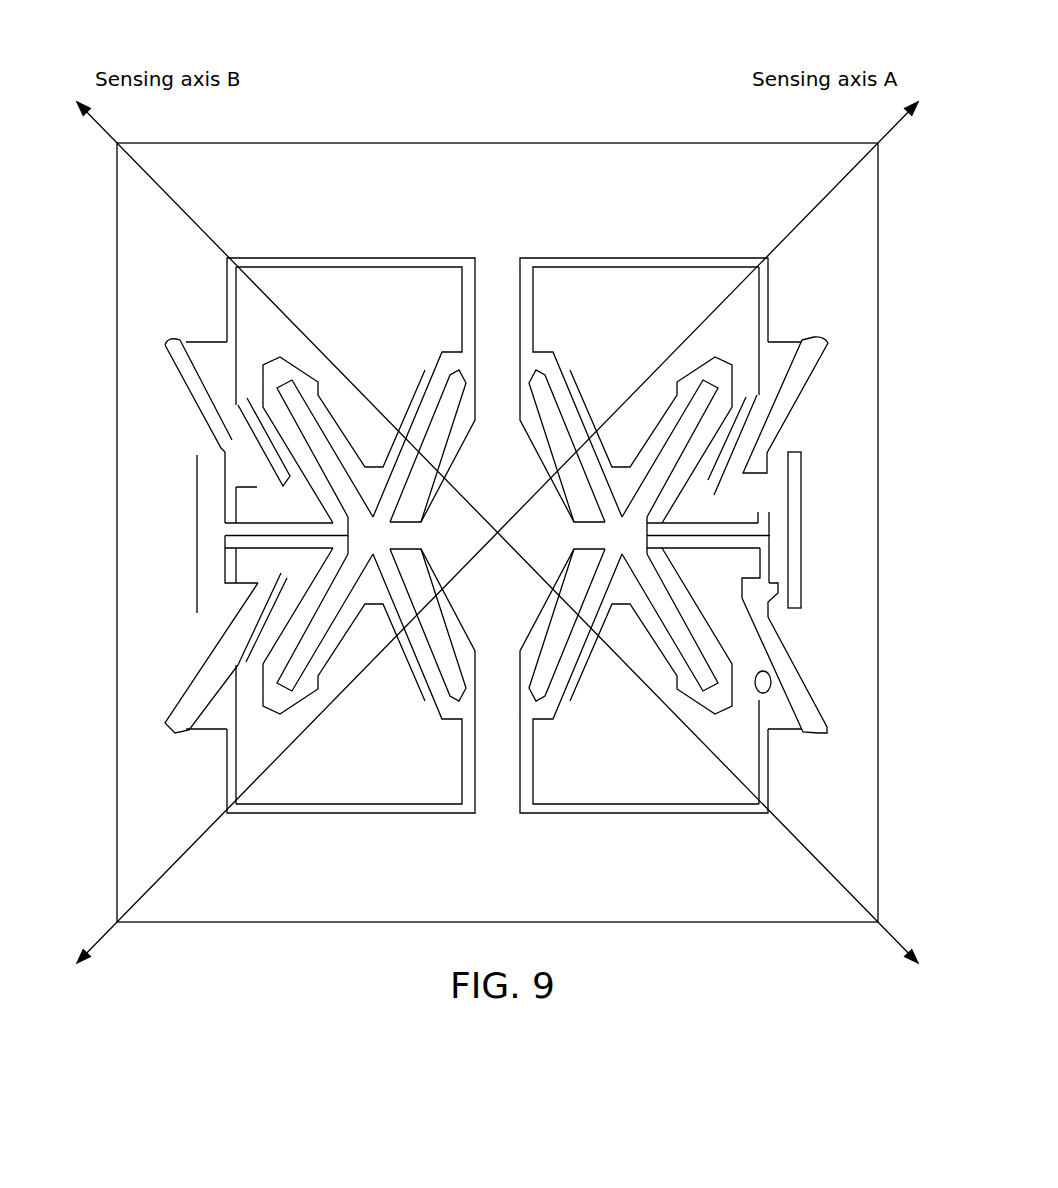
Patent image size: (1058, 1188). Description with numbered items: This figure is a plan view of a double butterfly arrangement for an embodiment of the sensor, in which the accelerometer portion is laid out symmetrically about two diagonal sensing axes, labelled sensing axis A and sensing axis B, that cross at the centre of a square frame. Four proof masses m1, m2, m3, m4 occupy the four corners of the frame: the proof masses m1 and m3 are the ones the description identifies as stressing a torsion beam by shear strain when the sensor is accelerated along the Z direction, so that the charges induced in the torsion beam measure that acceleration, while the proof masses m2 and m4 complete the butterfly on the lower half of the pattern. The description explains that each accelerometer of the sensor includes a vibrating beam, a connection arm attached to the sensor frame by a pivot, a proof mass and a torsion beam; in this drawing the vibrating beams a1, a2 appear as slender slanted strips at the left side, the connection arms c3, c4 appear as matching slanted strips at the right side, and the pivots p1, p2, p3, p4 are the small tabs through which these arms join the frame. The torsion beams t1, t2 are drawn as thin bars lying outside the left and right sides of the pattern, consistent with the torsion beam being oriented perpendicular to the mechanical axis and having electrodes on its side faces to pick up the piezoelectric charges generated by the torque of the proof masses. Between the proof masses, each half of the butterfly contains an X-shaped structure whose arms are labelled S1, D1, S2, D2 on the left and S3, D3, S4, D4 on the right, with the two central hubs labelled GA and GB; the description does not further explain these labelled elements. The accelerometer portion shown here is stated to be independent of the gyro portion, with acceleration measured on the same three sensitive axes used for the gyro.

The proof mass m1 is at (330, 390).
The proof mass m2 is at (330, 680).
The proof mass m3 is at (661, 390).
The proof mass m4 is at (661, 681).
The source region S1 is at (428, 446).
The source region S2 is at (384, 625).
The source region S3 is at (567, 446).
The source region S4 is at (611, 625).
The drain region D1 is at (344, 440).
The drain region D2 is at (358, 631).
The drain region D3 is at (651, 440).
The drain region D4 is at (651, 631).
The gate GA is at (651, 535).
The gate GB is at (342, 535).
The pivot p1 is at (252, 452).
The connection p2 is at (251, 603).
The connection p3 is at (741, 489).
The connection p4 is at (760, 582).
The vibrating beam a1 is at (201, 397).
The anchor arm a2 is at (211, 658).
The connection arm c3 is at (779, 405).
The connection arm c4 is at (778, 665).
The terminal t1 is at (179, 534).
The terminal t2 is at (808, 530).